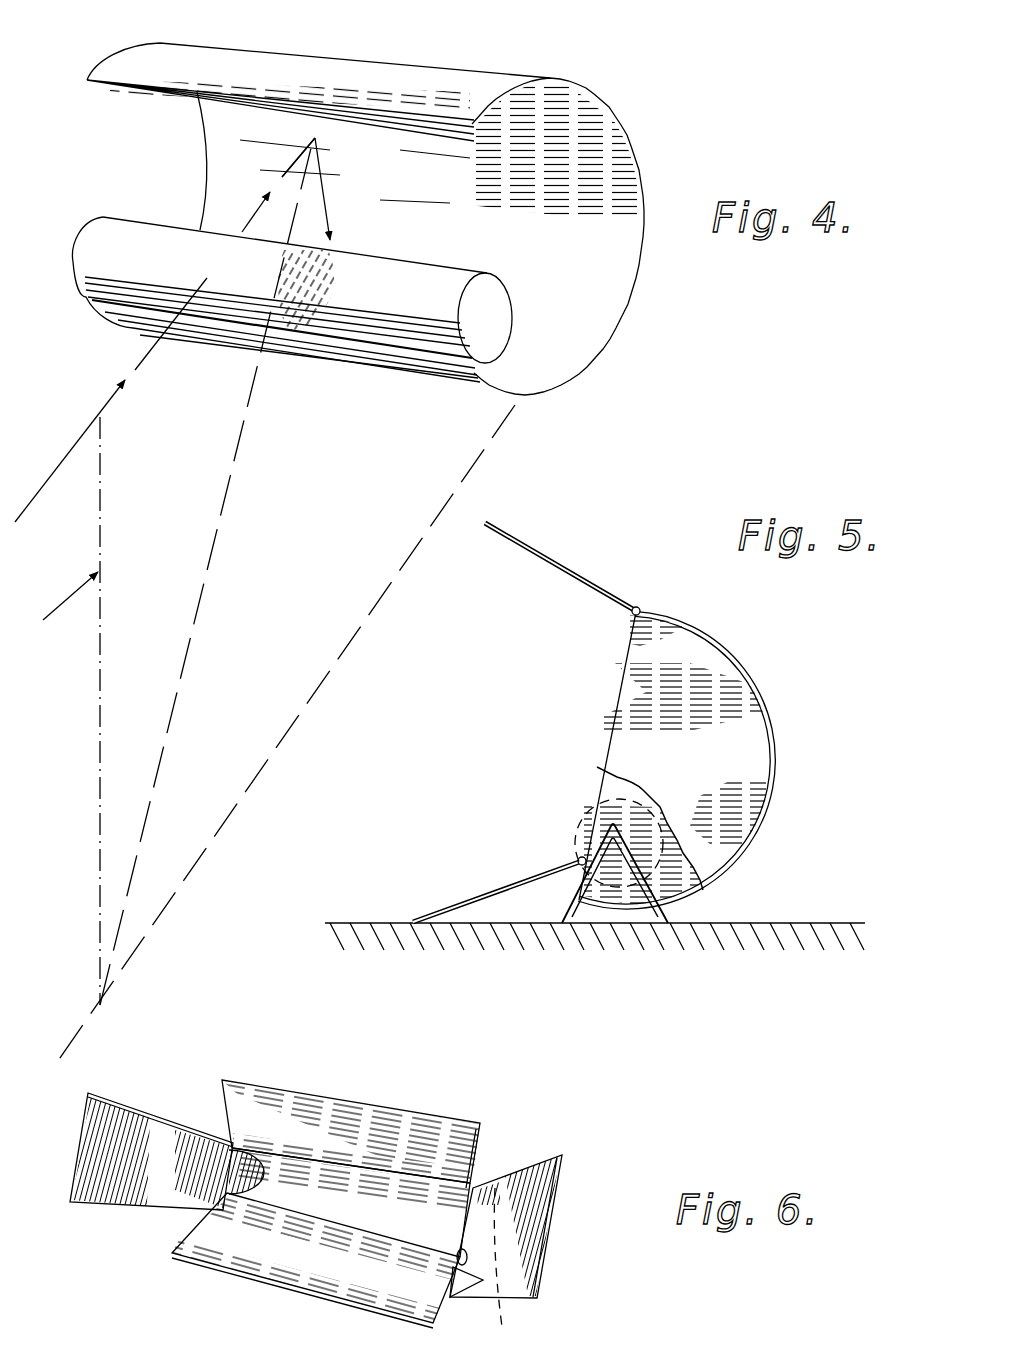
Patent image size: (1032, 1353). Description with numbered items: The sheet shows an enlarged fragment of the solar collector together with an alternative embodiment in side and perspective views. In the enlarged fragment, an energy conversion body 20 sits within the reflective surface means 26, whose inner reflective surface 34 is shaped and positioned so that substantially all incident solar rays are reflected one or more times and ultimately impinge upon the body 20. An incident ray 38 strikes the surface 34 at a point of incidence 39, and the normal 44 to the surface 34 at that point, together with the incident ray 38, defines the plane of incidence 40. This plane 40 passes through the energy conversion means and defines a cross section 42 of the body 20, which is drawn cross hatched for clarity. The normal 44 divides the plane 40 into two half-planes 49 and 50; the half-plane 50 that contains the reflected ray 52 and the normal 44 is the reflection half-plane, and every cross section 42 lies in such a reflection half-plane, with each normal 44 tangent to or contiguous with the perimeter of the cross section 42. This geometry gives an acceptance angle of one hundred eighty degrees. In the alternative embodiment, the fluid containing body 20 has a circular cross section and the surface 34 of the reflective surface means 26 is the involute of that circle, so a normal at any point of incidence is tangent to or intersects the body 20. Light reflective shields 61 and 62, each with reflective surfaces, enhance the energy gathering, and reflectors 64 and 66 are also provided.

In FIG. 4, the energy conversion body 20 is at (405, 267).
In FIG. 5, the energy conversion body 20 is at (598, 790).
In FIG. 6, the energy conversion body 20 is at (280, 1214).
In FIG. 4, the reflective surface means 26 is at (452, 73).
In FIG. 5, the reflective surface means 26 is at (740, 660).
In FIG. 6, the reflective surface means 26 is at (489, 1268).
In FIG. 4, the reflective surface 34 is at (252, 130).
In FIG. 5, the reflective surface 34 is at (752, 711).
In FIG. 6, the reflective surface 34 is at (406, 1214).
In FIG. 4, the incident ray 38 is at (118, 383).
In FIG. 4, the point of incidence 39 is at (318, 140).
In FIG. 4, the plane of incidence 40 is at (63, 616).
In FIG. 4, the cross section 42 is at (333, 289).
In FIG. 4, the normal 44 is at (217, 542).
In FIG. 4, the half-plane 49 is at (144, 711).
In FIG. 4, the reflection half-plane 50 is at (285, 735).
In FIG. 4, the reflected ray 52 is at (327, 210).
In FIG. 5, the light reflective shield 61 is at (497, 890).
In FIG. 6, the light reflective shield 61 is at (282, 1270).
In FIG. 5, the light reflective shield 62 is at (555, 561).
In FIG. 6, the light reflective shield 62 is at (410, 1112).
In FIG. 6, the reflector 64 is at (115, 1205).
In FIG. 6, the reflector 66 is at (523, 1263).